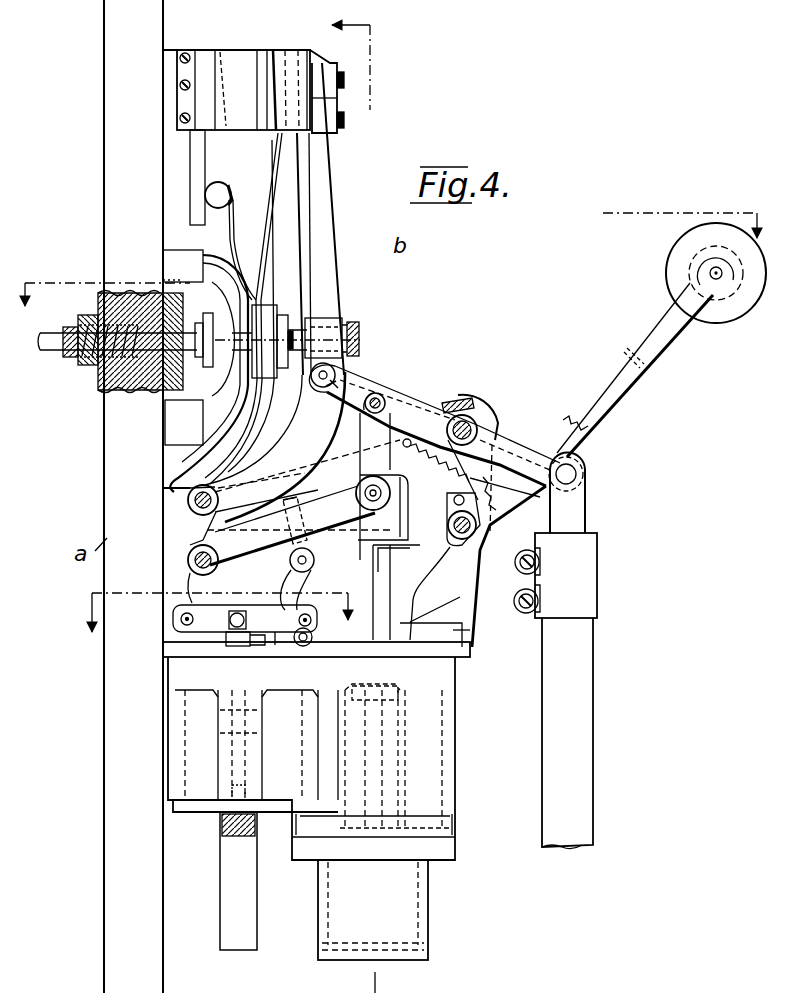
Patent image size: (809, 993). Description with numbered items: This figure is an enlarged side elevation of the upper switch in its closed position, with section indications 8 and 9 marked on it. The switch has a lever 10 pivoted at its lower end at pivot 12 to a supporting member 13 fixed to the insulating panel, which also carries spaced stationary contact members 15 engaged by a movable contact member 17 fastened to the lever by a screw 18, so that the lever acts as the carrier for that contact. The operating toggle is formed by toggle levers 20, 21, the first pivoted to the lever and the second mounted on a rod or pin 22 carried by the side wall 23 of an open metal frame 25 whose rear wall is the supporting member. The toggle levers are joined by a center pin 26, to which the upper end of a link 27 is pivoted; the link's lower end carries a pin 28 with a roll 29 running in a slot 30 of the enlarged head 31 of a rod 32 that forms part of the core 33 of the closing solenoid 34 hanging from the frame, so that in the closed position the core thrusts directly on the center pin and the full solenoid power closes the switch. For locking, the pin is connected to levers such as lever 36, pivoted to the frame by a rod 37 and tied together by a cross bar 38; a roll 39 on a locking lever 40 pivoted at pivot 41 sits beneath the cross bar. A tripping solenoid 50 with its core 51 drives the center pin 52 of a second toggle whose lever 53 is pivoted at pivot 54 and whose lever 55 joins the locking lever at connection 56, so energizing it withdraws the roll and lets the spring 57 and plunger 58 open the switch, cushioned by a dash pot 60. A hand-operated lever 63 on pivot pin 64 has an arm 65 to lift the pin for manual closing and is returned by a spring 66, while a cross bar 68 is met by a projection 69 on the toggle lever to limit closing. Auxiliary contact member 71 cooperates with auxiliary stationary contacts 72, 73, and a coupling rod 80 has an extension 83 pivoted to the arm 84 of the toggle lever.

The roller / section line 8- 8 is at (388, 258).
The section line 9- 9 is at (217, 607).
The lever 10 is at (335, 270).
The pivot 12 is at (193, 515).
The supporting member 13 is at (172, 545).
The stationary contact members 15 is at (168, 257).
The movable contact member 17 is at (212, 262).
The screw 18 is at (352, 334).
The toggle lever 20 is at (347, 387).
The toggle lever 21 is at (402, 404).
The rod or pin 22 is at (478, 430).
The side wall 23 is at (307, 465).
The open metal frame 25 is at (462, 638).
The center pin 26 is at (381, 398).
The link 27 is at (346, 427).
The pin 28 is at (357, 488).
The roll 29 is at (358, 503).
The slot 30 is at (393, 503).
The head 31 is at (401, 455).
The rod 32 is at (364, 564).
The core 33 is at (396, 693).
The solenoid or magnet 34 is at (440, 710).
The lever 36 is at (253, 604).
The rod 37 is at (191, 574).
The cross bar 38 is at (280, 492).
The roll 39 is at (291, 555).
The lever 40 is at (288, 565).
The pivot 41 is at (305, 646).
The solenoid or magnet 50 is at (185, 745).
The core 51 is at (224, 858).
The center pin 52 is at (236, 612).
The toggle lever 53 is at (197, 632).
The pivot 54 is at (180, 619).
The toggle lever 55 is at (308, 590).
The pivotal connection 56 is at (312, 619).
The spring 57 is at (80, 365).
The plunger 58 is at (186, 333).
The dash pot 60 is at (428, 890).
The hand-operated lever 63 is at (624, 354).
The pivot pin or rod 64 is at (458, 540).
The arm 65 is at (514, 601).
The spring 66 is at (440, 474).
The cross bar 68 is at (465, 402).
The projection 69 is at (453, 401).
The auxiliary movable contact member 71 is at (220, 188).
The auxiliary stationary contact member 72 is at (283, 134).
The auxiliary stationary contact member 73 is at (200, 172).
The bar or rod 80 is at (580, 703).
The extension 83 is at (585, 500).
The arm 84 is at (514, 463).